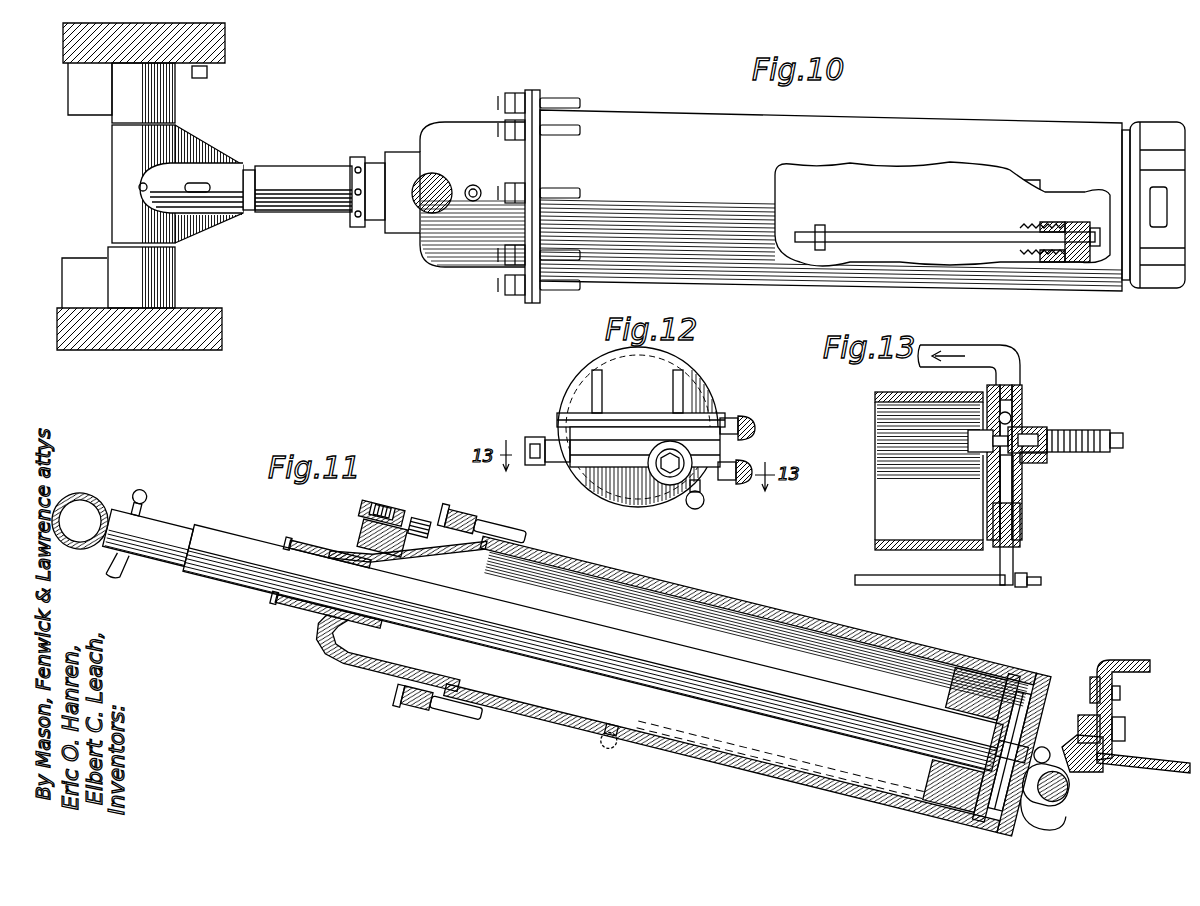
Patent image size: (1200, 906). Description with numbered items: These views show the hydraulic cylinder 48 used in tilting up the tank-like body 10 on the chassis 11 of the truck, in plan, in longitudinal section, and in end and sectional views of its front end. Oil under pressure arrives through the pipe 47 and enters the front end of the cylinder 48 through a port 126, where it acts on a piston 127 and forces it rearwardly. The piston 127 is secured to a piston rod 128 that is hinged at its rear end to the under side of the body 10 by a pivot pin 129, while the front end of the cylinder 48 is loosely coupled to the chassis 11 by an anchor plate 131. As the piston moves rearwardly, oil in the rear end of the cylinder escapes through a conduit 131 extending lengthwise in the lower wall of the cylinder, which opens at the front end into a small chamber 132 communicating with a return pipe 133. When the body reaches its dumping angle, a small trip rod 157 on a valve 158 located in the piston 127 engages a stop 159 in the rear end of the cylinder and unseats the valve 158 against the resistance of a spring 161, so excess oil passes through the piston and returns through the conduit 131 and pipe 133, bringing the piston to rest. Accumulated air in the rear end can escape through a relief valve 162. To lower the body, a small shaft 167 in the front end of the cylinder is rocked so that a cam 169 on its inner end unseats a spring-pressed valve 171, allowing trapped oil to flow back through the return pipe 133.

In FIG. 10, the tank-like body 10 is at (225, 46).
In FIG. 11, the chassis 11 is at (1137, 663).
In FIG. 12, the pipe 47 is at (740, 416).
In FIG. 10, the hydraulic cylinder 48 is at (1033, 124).
In FIG. 12, the hydraulic cylinder 48 is at (575, 381).
In FIG. 13, the hydraulic cylinder 48 is at (880, 533).
In FIG. 11, the hydraulic cylinder 48 is at (552, 728).
In FIG. 11, the port 126 is at (1046, 746).
In FIG. 10, the piston 127 is at (1085, 263).
In FIG. 11, the piston 127 is at (993, 670).
In FIG. 10, the piston rod 128 is at (287, 178).
In FIG. 11, the piston rod 128 is at (228, 582).
In FIG. 10, the pivot pin 129 is at (163, 114).
In FIG. 11, the pivot pin 129 is at (92, 500).
In FIG. 12, the conduit 131 is at (690, 507).
In FIG. 13, the conduit 131 is at (1022, 404).
In FIG. 11, the conduit 131 is at (613, 732).
In FIG. 13, the small chamber 132 is at (1013, 431).
In FIG. 12, the pipe 133 is at (736, 486).
In FIG. 13, the pipe 133 is at (953, 352).
In FIG. 10, the trip rod 157 is at (855, 242).
In FIG. 10, the valve 158 is at (1105, 262).
In FIG. 11, the stop 159 is at (373, 632).
In FIG. 10, the spring 161 is at (1043, 252).
In FIG. 10, the relief valve 162 is at (438, 178).
In FIG. 11, the relief valve 162 is at (382, 500).
In FIG. 13, the small shaft 167 is at (1013, 558).
In FIG. 11, the small shaft 167 is at (1063, 793).
In FIG. 13, the cam 169 is at (1045, 460).
In FIG. 13, the spring-pressed valve 171 is at (978, 453).